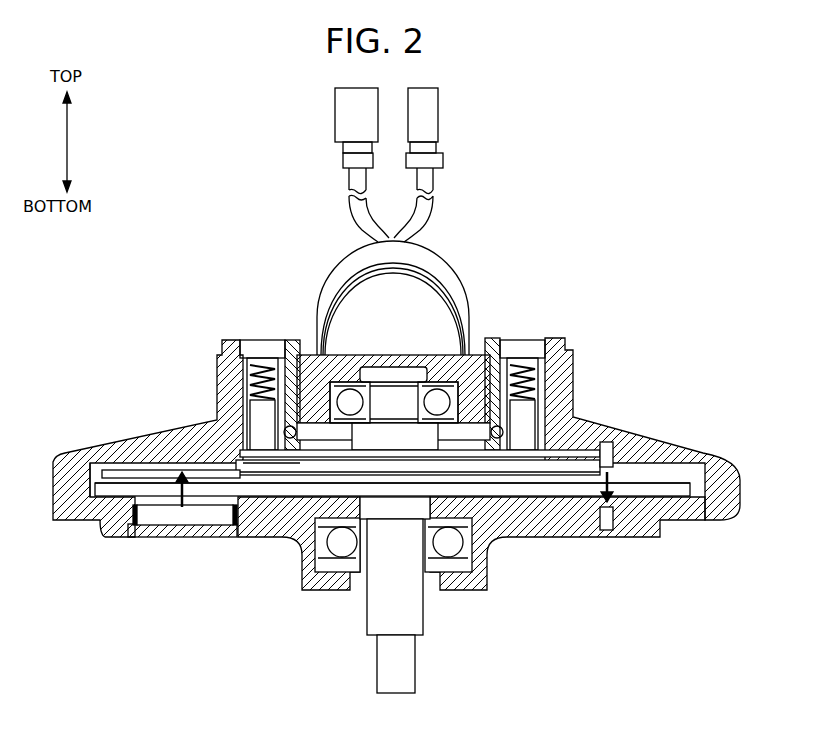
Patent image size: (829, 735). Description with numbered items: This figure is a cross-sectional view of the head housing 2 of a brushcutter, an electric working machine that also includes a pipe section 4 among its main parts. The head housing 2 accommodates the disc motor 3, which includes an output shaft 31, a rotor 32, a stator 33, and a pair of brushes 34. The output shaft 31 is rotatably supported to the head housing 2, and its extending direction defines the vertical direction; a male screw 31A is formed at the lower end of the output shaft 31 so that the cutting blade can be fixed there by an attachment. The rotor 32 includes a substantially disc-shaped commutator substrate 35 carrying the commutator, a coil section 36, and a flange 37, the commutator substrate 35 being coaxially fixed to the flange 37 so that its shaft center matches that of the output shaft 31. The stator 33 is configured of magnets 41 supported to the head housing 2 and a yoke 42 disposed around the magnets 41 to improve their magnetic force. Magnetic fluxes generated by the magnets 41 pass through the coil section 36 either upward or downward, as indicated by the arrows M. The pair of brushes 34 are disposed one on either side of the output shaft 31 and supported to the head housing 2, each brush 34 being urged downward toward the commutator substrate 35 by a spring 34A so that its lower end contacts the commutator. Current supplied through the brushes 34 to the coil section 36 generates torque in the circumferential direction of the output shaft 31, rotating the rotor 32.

The head housing 2 is at (570, 360).
The disc motor 3 is at (330, 434).
The pipe section 4 is at (413, 320).
The output shaft 31 is at (410, 583).
The male screw 31A is at (418, 657).
The rotor 32 is at (618, 486).
The stator 33 is at (146, 498).
The brushes 34 is at (493, 352).
The spring 34A is at (524, 375).
The commutator substrate 35 is at (545, 420).
The coil section 36 is at (612, 460).
The flange 37 is at (503, 470).
The magnets 41 is at (228, 536).
The yoke 42 is at (193, 462).
The arrows indicating magnetic flux directions M is at (178, 506).